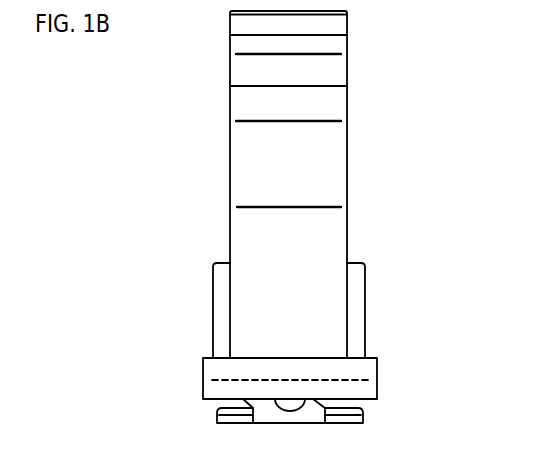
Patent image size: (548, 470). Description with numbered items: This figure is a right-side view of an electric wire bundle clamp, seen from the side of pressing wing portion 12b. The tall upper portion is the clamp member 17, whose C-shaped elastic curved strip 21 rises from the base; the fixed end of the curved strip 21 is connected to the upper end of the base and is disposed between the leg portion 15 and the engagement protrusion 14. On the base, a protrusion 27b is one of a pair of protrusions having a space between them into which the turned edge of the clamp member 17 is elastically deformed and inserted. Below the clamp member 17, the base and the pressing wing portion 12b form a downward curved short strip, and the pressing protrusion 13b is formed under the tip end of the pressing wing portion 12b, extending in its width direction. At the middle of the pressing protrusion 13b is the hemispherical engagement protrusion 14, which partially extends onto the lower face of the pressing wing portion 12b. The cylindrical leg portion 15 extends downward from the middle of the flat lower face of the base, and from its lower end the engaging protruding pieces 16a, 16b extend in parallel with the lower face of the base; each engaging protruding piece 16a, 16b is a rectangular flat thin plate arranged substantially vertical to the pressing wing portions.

The clamp member 17 is at (403, 103).
The curved strip 21 is at (347, 167).
The protrusion 27b is at (365, 302).
The pressing wing portion 12b is at (374, 367).
The pressing protrusion 13b is at (377, 390).
The engaging protruding piece 16a is at (217, 422).
The engaging protruding piece 16b is at (363, 422).
The leg portion 15 is at (280, 423).
The engagement protrusion 14 is at (302, 404).